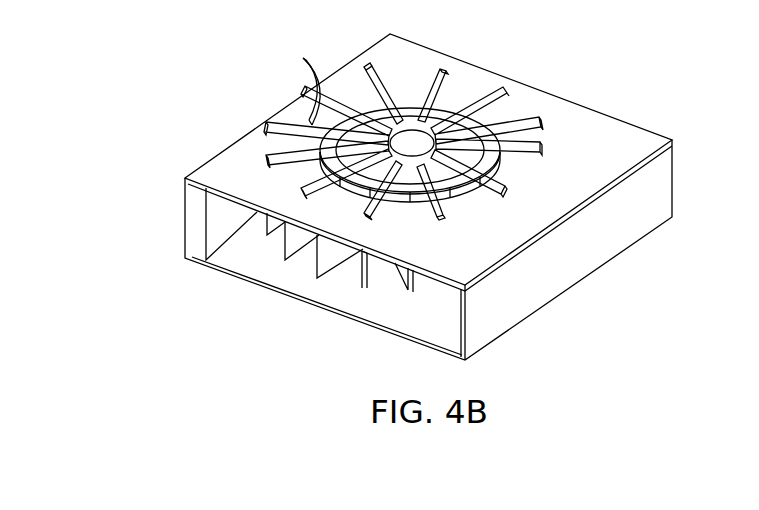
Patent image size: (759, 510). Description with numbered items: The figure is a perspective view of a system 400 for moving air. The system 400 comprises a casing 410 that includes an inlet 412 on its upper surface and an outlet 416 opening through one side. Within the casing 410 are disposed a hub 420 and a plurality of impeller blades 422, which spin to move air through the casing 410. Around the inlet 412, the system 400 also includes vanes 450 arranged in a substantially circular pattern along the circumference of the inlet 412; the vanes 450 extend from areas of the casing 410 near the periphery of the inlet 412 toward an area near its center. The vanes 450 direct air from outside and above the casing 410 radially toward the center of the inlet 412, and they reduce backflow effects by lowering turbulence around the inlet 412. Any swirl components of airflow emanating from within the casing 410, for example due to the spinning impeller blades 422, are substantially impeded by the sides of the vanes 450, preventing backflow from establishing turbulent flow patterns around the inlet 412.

The system 400 is at (190, 46).
The casing 410 is at (626, 250).
The inlet 412 is at (400, 105).
The outlet 416 is at (207, 236).
The hub 420 is at (418, 146).
The impeller blades 422 is at (360, 272).
The vanes 450 is at (303, 58).